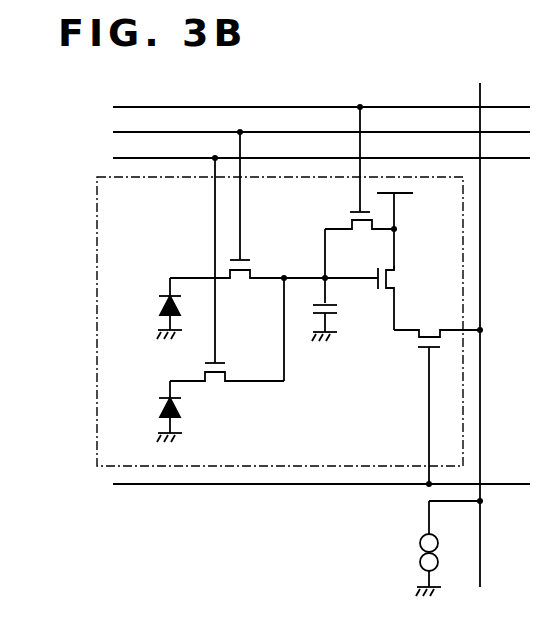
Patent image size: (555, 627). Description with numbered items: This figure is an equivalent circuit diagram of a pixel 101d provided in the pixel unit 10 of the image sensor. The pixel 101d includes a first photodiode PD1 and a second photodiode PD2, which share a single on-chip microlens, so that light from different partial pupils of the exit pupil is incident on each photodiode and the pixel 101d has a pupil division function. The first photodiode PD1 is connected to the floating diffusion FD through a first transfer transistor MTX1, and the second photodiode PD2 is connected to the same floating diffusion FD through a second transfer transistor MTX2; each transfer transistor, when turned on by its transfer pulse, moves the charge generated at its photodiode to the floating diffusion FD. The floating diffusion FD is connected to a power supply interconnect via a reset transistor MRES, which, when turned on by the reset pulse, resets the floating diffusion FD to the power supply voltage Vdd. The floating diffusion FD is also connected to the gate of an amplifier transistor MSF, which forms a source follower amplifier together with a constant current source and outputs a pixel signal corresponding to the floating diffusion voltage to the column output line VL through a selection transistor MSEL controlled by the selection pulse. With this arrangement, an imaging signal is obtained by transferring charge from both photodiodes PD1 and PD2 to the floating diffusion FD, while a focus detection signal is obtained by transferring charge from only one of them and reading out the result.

The pixel unit 10 is at (508, 86).
The pixel 101d is at (97, 232).
The column output line VL is at (477, 326).
The first transfer transistor MTX1 is at (227, 281).
The second transfer transistor MTX2 is at (227, 384).
The first photodiode PD1 is at (149, 308).
The second photodiode PD2 is at (149, 411).
The reset transistor MRES is at (342, 216).
The floating diffusion FD is at (338, 320).
The power supply voltage Vdd is at (404, 204).
The amplifier transistor MSF is at (404, 298).
The selection transistor MSEL is at (423, 342).